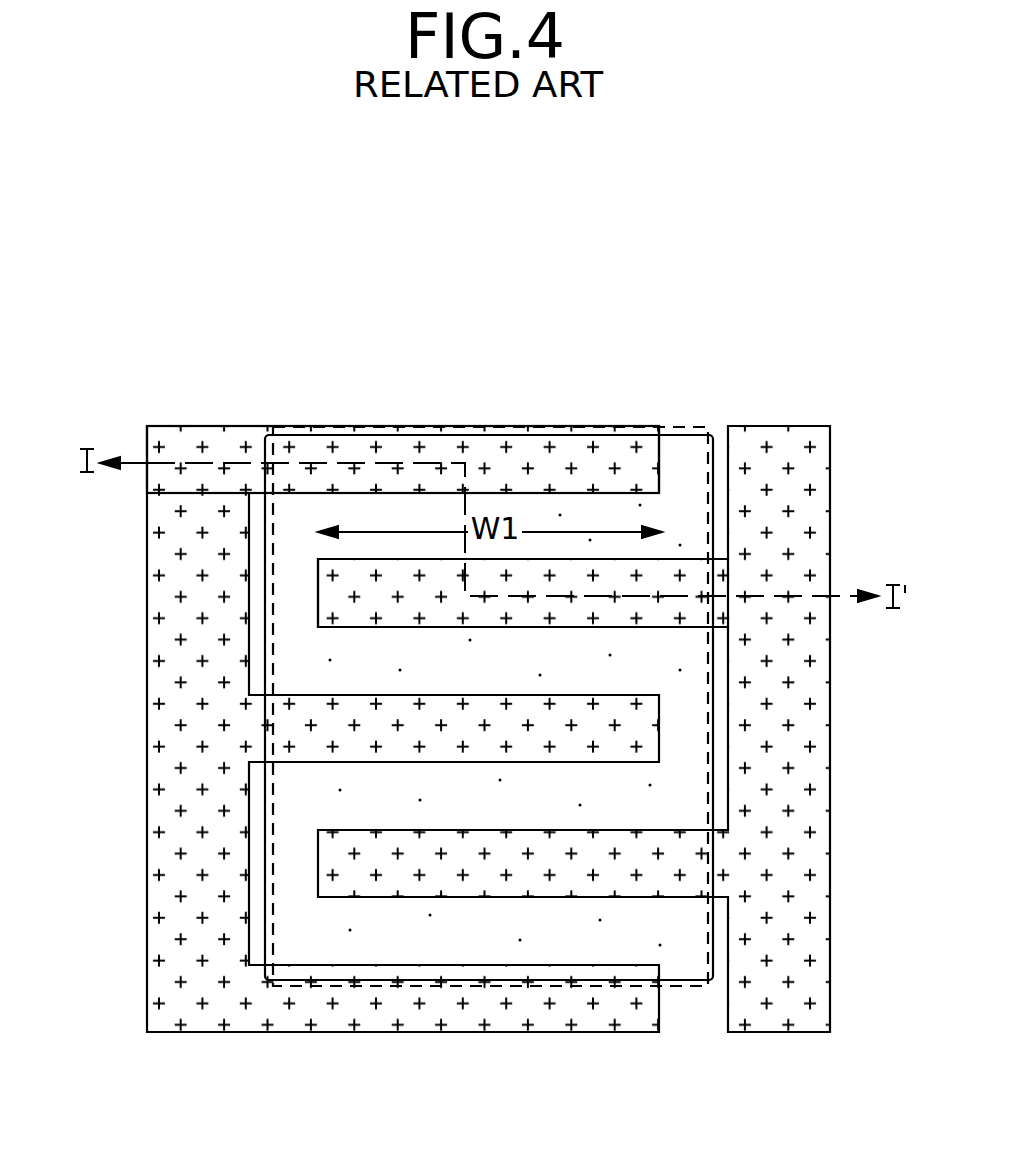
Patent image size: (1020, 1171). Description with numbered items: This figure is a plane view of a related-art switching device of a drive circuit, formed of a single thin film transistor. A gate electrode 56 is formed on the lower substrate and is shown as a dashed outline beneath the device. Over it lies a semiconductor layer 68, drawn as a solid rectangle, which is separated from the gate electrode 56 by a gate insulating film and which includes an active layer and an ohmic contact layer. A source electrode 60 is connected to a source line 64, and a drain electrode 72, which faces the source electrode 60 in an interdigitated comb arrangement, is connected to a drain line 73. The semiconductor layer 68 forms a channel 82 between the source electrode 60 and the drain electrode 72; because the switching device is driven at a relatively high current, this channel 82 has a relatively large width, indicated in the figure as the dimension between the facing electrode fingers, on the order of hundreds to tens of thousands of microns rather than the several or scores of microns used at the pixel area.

The gate electrode 56 is at (707, 983).
The source electrode 60 is at (578, 448).
The source line 64 is at (158, 653).
The semiconductor layer 68 is at (669, 976).
The drain electrode 72 is at (613, 568).
The drain line 73 is at (828, 500).
The channel 82 is at (472, 938).